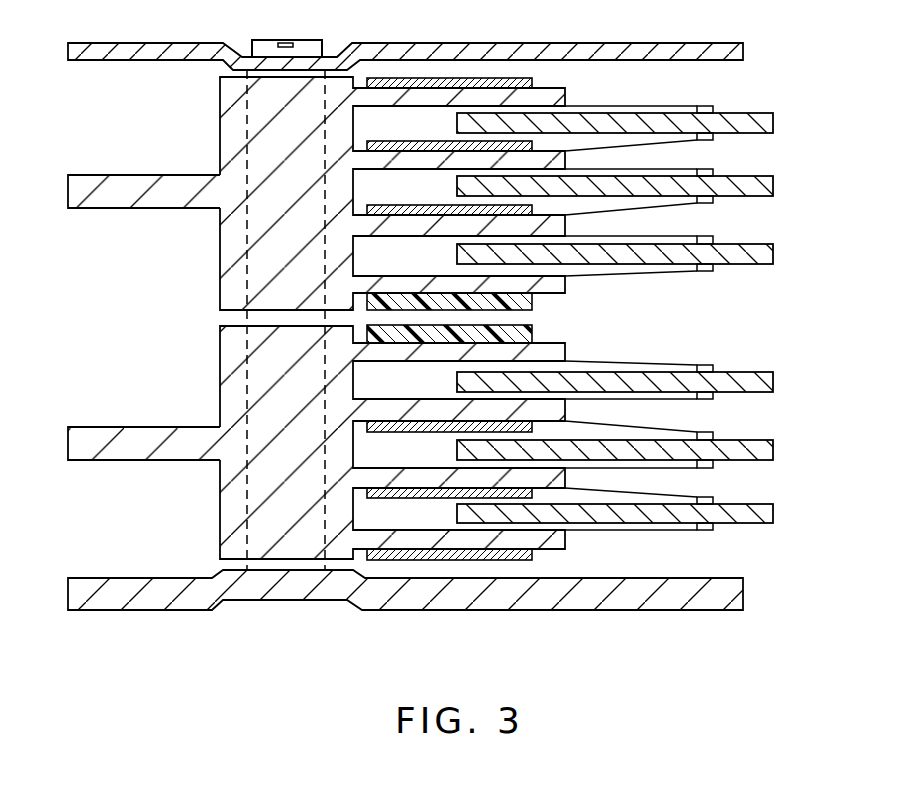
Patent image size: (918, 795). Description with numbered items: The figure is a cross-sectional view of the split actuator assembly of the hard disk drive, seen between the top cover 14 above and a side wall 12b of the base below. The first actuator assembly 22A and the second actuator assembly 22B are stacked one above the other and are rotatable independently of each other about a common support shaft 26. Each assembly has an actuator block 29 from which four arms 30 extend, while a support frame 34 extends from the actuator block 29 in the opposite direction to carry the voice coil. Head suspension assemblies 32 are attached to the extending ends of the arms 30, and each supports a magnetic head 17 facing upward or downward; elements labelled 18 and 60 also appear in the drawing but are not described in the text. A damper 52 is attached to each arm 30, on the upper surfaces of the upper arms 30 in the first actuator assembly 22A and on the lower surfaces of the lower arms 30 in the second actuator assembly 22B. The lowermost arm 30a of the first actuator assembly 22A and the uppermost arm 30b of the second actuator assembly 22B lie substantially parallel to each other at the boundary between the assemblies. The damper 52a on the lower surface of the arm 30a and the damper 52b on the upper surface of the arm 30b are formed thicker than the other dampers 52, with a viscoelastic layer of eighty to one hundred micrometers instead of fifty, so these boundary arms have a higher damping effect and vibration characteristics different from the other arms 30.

The side wall 12b is at (630, 610).
The top cover 14 is at (637, 43).
The magnetic head 17 is at (700, 106).
The electrode plate 18 is at (755, 114).
The first actuator assembly 22A is at (196, 253).
The second actuator assembly 22B is at (196, 366).
The support shaft 26 is at (287, 563).
The actuator block 29 is at (324, 318).
The arm 30 is at (565, 92).
The lowermost arm 30a is at (565, 286).
The uppermost arm 30b is at (565, 355).
The head suspension assembly 32 is at (645, 148).
The support frame 34 is at (122, 175).
The damper 52 is at (440, 146).
The damper 52a is at (532, 301).
The damper 52b is at (532, 334).
The cover 60 is at (307, 47).